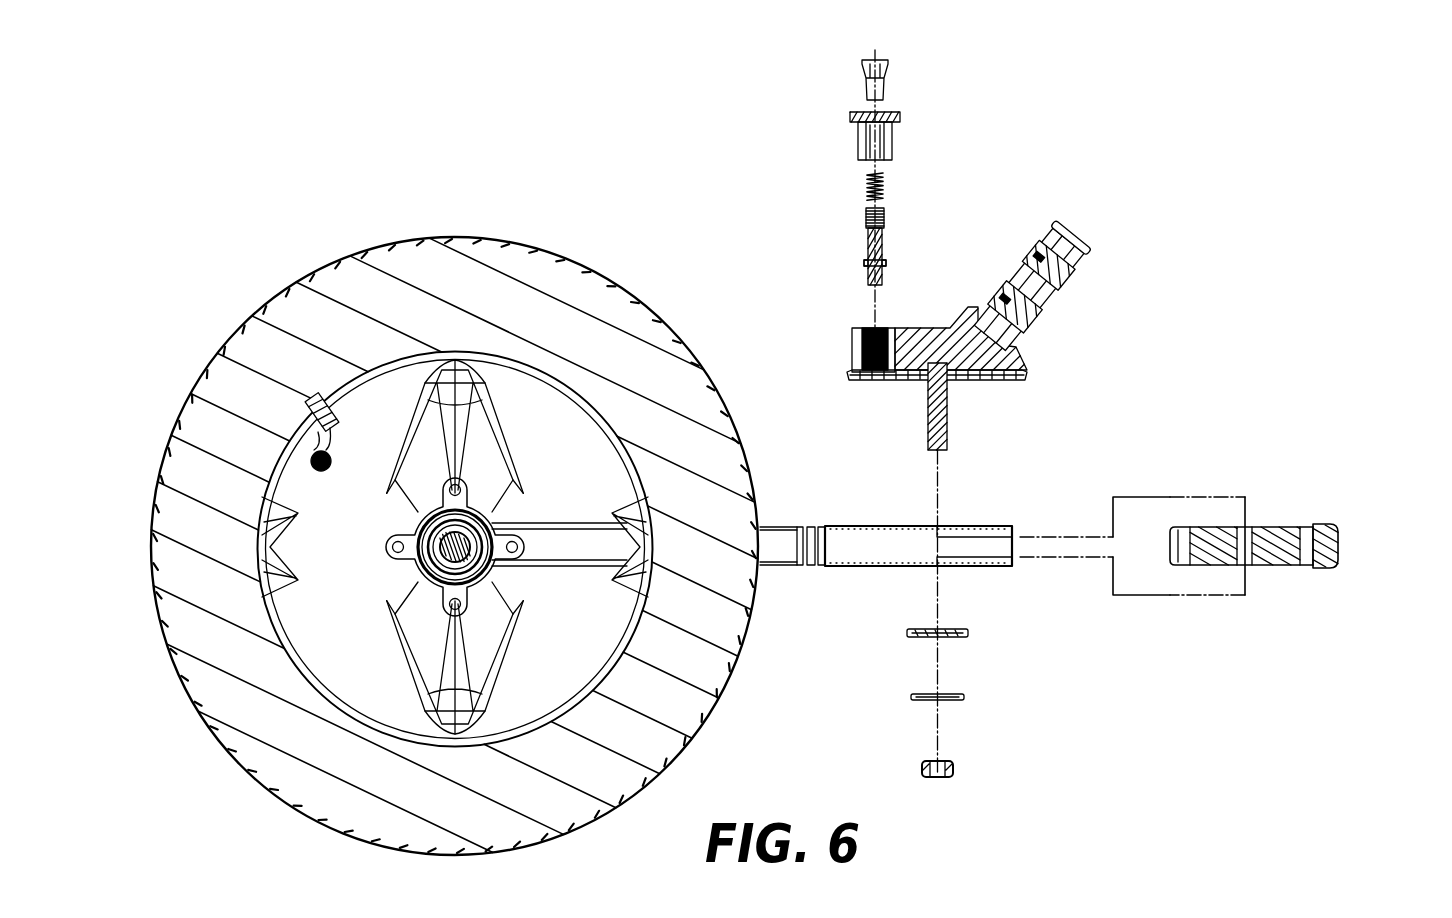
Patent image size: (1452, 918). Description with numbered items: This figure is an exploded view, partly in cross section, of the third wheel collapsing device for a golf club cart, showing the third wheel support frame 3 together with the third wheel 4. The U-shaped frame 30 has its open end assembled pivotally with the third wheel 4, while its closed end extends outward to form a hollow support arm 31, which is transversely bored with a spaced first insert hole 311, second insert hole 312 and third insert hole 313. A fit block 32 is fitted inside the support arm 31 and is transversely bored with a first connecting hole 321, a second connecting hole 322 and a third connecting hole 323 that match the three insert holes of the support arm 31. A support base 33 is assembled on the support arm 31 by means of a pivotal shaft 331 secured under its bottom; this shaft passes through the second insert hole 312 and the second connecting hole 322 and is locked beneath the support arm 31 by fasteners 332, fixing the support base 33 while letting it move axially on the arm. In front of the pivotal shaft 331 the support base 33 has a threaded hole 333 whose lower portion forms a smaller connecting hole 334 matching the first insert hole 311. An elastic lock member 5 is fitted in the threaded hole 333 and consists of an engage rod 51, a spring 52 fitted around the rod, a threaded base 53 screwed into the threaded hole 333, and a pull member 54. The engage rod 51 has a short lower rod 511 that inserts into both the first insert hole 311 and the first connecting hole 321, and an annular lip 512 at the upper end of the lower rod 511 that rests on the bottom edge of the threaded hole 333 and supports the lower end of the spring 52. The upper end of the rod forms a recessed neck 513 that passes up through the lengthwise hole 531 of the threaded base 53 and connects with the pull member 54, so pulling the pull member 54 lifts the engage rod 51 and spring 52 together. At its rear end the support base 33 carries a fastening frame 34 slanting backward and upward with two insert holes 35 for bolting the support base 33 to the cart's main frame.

The third wheel support frame 3 is at (1102, 488).
The third wheel 4 is at (485, 292).
The elastic lock member 5 is at (874, 189).
The U-shaped frame 30 is at (579, 525).
The support arm 31 is at (843, 525).
The fit block 32 is at (1279, 600).
The support base 33 is at (1012, 350).
The fastening frame 34 is at (1045, 290).
The insert holes 35 is at (1005, 297).
The engage rod 51 is at (868, 254).
The spring 52 is at (867, 183).
The threaded base 53 is at (858, 142).
The pull member 54 is at (857, 86).
The first insert hole 311 is at (875, 525).
The second insert hole 312 is at (944, 525).
The third insert hole 313 is at (1005, 525).
The first connecting hole 321 is at (1185, 557).
The second connecting hole 322 is at (1252, 557).
The third connecting hole 323 is at (1310, 557).
The pivotal shaft 331 is at (947, 403).
The fasteners 332 is at (1000, 633).
The threaded hole 333 is at (860, 328).
The connecting hole 334 is at (873, 377).
The lower rod 511 is at (864, 278).
The annular lip 512 is at (886, 263).
The recessed neck 513 is at (868, 218).
The lengthwise hole 531 is at (882, 110).